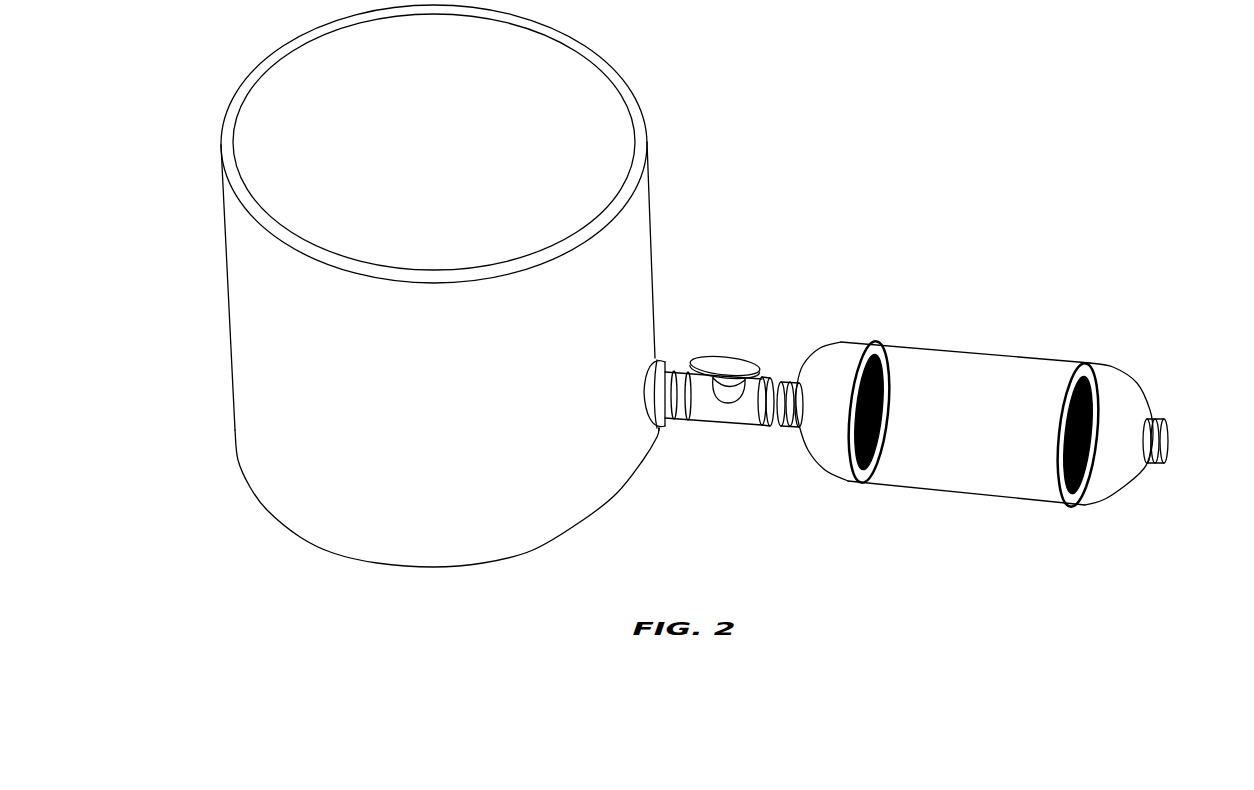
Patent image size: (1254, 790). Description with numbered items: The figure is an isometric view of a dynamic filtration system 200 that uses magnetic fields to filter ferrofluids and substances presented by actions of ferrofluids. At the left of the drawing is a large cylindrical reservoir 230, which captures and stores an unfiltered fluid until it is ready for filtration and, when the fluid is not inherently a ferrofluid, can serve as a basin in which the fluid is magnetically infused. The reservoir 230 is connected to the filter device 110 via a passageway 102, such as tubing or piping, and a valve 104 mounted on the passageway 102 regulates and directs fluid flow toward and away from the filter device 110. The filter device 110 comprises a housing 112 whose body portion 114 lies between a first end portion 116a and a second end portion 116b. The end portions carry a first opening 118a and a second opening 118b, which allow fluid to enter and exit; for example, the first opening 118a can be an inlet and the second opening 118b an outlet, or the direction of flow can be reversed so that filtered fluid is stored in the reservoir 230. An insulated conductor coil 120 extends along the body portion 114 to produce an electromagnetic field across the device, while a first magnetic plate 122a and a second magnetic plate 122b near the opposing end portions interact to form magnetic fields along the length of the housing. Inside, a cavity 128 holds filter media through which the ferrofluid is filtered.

The dynamic filtration system 200 is at (895, 106).
The reservoir 230 is at (630, 267).
The filter device 110 is at (1000, 249).
The passageway 102 is at (708, 413).
The valve 104 is at (725, 358).
The housing 112 is at (983, 482).
The body portion 114 is at (978, 370).
The first end portion 116a is at (836, 347).
The second end portion 116b is at (1132, 490).
The first opening 118a is at (773, 427).
The second opening 118b is at (1163, 443).
The insulated conductor coil 120 is at (926, 347).
The first magnetic plate 122a is at (877, 460).
The second magnetic plate 122b is at (1090, 483).
The cavity 128 is at (991, 411).